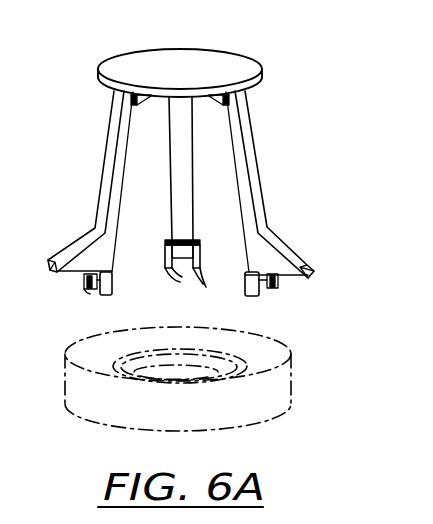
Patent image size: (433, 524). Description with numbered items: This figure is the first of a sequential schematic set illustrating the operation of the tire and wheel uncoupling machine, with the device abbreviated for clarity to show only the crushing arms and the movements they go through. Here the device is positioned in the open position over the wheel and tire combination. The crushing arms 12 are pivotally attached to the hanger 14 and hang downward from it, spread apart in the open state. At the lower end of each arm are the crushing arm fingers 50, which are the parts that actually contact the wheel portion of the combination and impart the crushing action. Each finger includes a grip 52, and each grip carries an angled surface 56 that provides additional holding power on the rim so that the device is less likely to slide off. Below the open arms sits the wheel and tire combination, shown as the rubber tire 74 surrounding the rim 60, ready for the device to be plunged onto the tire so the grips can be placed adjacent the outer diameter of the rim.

The hanger 14 is at (212, 51).
The crushing arms 12 is at (103, 163).
The crushing arm fingers 50 is at (92, 299).
The angled surface 56 is at (113, 277).
The grips 52 is at (278, 286).
The rim 60 is at (232, 357).
The tire 74 is at (297, 381).